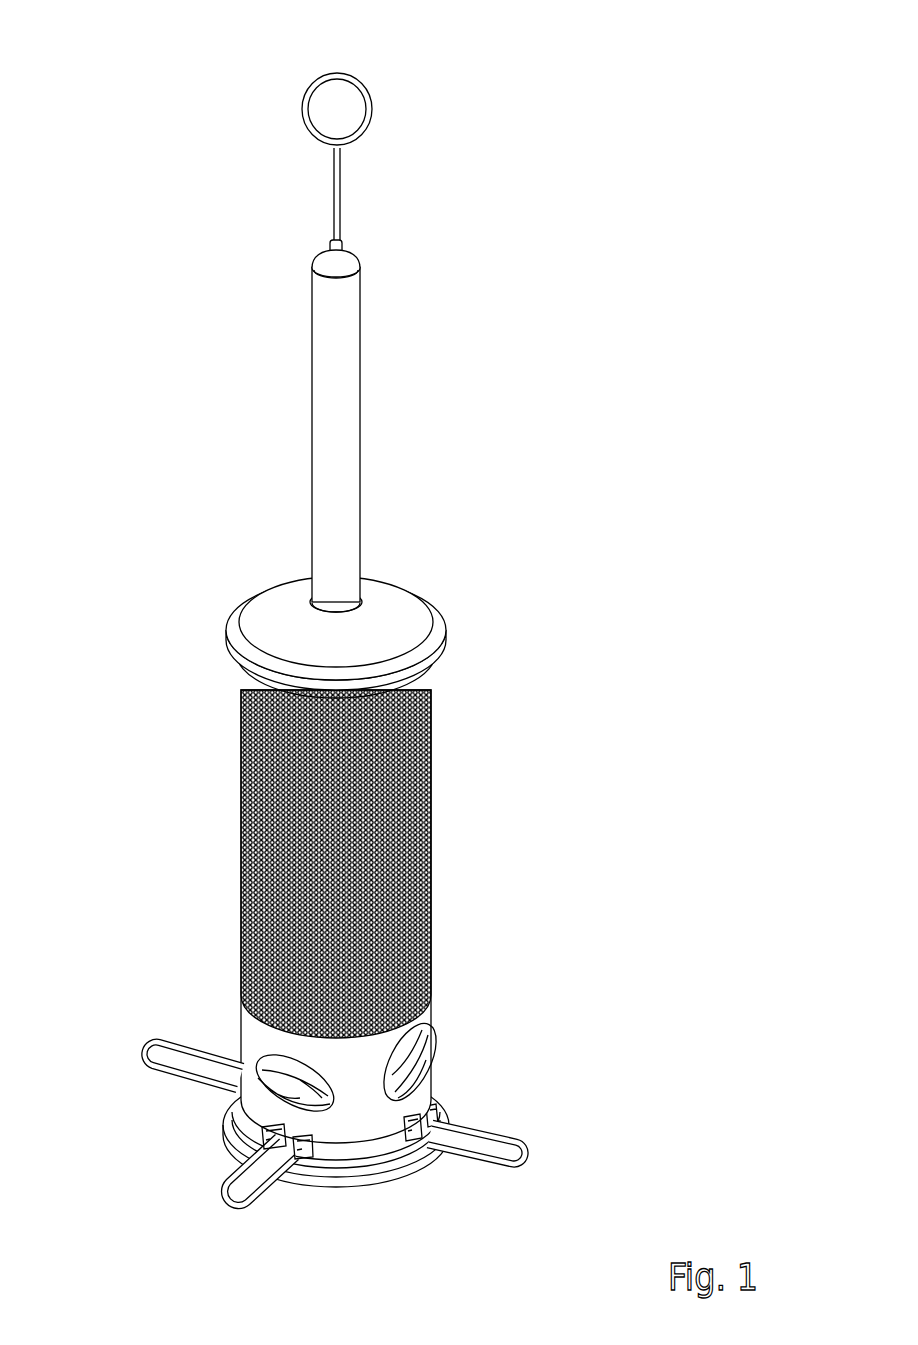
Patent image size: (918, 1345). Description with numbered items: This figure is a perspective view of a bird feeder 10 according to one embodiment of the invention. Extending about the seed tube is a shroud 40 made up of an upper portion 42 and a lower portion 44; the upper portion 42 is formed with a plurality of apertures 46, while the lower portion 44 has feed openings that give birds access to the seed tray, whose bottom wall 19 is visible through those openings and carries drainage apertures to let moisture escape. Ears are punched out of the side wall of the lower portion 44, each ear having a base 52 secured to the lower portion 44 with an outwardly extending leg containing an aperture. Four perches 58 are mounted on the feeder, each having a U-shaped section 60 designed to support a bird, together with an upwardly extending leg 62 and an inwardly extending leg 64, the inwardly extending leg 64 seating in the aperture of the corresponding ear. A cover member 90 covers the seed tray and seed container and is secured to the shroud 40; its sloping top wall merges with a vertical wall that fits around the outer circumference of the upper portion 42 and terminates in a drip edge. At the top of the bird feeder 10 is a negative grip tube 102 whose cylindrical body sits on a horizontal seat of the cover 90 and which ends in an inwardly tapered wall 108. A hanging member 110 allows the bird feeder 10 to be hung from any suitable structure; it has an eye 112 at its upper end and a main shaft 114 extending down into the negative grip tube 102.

The bird feeder 10 is at (615, 227).
The bottom wall 19 is at (412, 1058).
The shroud 40 is at (409, 916).
The upper portion 42 is at (432, 892).
The lower portion 44 is at (450, 1078).
The apertures 46 is at (430, 972).
The base 52 is at (308, 1158).
The perch 58 is at (336, 1108).
The U-shaped section 60 is at (153, 1048).
The upwardly extending leg 62 is at (418, 1140).
The inwardly extending leg 64 is at (267, 1136).
The cover member 90 is at (440, 590).
The negative grip tube 102 is at (385, 405).
The inwardly tapered wall 108 is at (350, 258).
The hanging member 110 is at (346, 132).
The eye 112 is at (366, 97).
The main shaft 114 is at (330, 250).